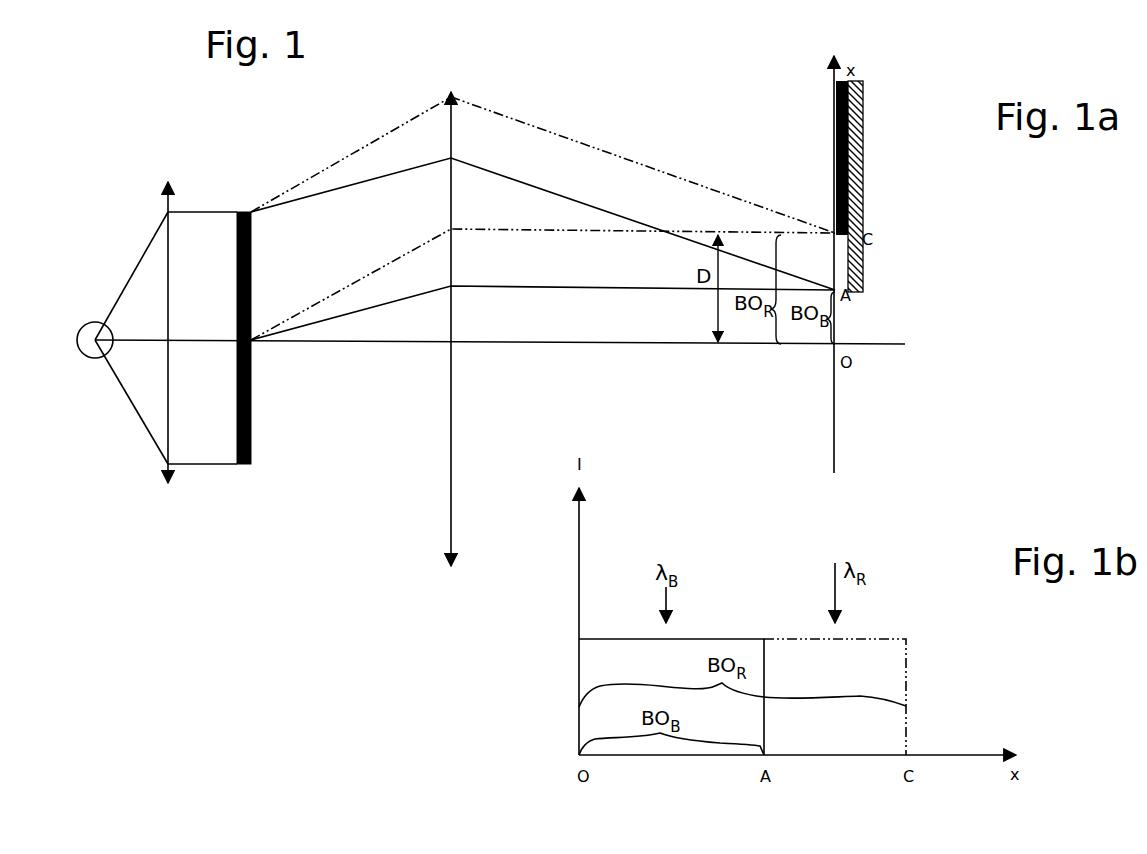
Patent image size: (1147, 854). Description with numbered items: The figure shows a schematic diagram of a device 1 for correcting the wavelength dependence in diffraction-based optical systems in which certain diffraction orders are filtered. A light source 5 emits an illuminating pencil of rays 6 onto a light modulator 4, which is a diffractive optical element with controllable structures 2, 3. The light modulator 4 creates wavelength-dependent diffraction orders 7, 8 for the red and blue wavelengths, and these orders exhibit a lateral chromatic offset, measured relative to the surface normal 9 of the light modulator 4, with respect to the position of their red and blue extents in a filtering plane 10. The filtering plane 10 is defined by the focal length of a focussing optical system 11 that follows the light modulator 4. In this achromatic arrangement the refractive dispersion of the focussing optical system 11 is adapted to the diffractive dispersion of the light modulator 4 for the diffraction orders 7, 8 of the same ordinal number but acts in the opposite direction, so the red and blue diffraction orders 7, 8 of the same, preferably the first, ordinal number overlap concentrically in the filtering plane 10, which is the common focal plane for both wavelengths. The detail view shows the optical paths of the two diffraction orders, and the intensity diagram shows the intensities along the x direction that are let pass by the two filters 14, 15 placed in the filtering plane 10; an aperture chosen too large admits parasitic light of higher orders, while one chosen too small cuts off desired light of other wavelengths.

In FIG. 1, the device 1 is at (689, 90).
In FIG. 1, the controllable structure 2 is at (252, 276).
In FIG. 1, the controllable structure 3 is at (252, 414).
In FIG. 1, the light modulator 4 is at (254, 446).
In FIG. 1, the light source 5 is at (88, 324).
In FIG. 1, the illuminating pencil of rays 6 is at (205, 465).
In FIG. 1, the diffraction order 7 is at (643, 166).
In FIG. 1, the diffraction order 8 is at (632, 218).
In FIG. 1, the surface normal 9 is at (660, 344).
In FIG. 1A, the filtering plane 10 is at (836, 443).
In FIG. 1, the focussing optical system 11 is at (452, 458).
In FIG. 1A, the filter 14 is at (836, 152).
In FIG. 1A, the filter 15 is at (864, 173).